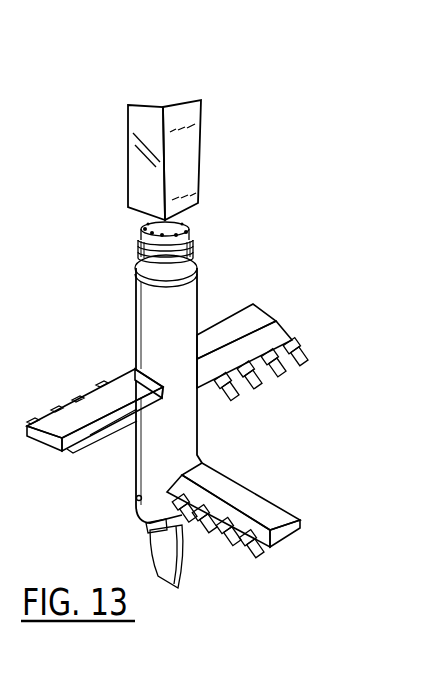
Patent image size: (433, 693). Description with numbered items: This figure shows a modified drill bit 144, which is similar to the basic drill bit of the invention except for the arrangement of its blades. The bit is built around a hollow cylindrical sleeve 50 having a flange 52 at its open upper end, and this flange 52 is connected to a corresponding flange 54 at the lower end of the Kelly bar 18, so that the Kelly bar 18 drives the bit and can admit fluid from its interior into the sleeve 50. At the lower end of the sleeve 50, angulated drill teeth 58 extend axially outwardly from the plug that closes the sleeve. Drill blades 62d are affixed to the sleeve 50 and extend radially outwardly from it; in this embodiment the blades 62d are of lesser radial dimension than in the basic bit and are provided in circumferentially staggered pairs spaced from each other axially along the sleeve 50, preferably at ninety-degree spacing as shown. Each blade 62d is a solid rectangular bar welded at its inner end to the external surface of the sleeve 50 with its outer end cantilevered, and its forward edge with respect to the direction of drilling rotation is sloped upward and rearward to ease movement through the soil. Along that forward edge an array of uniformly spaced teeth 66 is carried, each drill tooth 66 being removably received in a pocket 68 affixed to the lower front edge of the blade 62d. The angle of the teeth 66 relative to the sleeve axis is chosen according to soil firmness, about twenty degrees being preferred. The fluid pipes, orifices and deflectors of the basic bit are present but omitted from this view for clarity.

The drill bit 144 is at (90, 192).
The Kelly bar 18 is at (195, 149).
The flange 54 is at (190, 228).
The flange 52 is at (194, 251).
The hollow cylindrical sleeve 50 is at (136, 302).
The drill blades 62d is at (258, 312).
The pocket 68 is at (293, 346).
The teeth 66 is at (263, 382).
The angulated drill teeth 58 is at (159, 540).